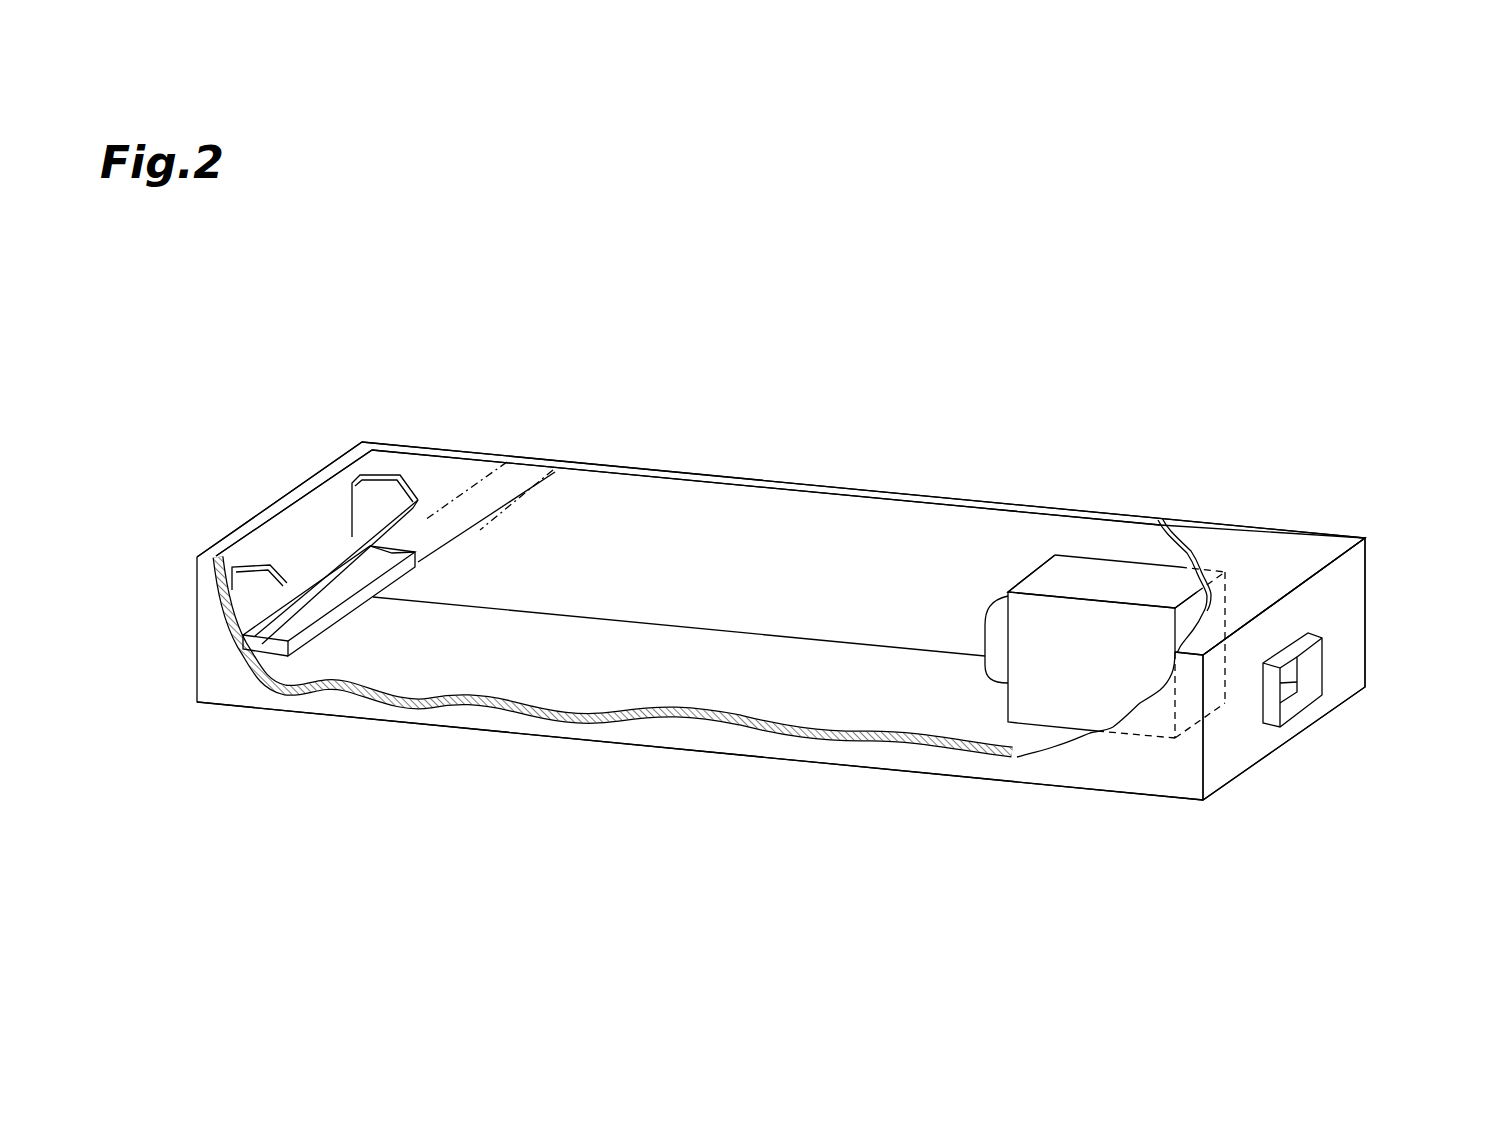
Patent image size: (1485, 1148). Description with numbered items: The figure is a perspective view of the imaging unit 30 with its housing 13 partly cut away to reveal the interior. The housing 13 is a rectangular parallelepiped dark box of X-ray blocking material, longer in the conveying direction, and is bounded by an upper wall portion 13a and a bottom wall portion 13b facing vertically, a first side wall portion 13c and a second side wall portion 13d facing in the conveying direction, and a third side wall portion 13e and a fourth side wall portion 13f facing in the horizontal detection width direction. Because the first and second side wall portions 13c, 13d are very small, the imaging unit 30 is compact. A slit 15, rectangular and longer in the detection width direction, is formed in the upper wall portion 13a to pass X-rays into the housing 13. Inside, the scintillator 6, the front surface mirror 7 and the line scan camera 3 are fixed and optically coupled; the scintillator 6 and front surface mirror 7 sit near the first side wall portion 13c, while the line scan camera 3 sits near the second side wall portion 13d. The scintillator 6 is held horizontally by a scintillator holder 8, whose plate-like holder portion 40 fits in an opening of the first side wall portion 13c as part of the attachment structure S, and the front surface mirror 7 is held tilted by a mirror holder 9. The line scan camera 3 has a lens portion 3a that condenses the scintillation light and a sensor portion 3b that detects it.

The imaging unit 30 is at (1056, 368).
The housing 13 is at (1315, 520).
The upper wall portion 13a is at (1218, 552).
The bottom wall portion 13b is at (735, 707).
The first side wall portion 13c is at (288, 500).
The second side wall portion 13d is at (1342, 600).
The third side wall portion 13e is at (476, 722).
The fourth side wall portion 13f is at (772, 492).
The line scan camera 3 is at (1036, 742).
The lens portion 3a is at (995, 640).
The sensor portion 3b is at (1102, 580).
The scintillator 6 is at (257, 652).
The front surface mirror 7 is at (417, 538).
The scintillator holder 8 is at (318, 650).
The mirror holder 9 is at (383, 462).
The slit 15 is at (503, 505).
The holder portion 40 is at (353, 602).
The attachment structure S is at (432, 580).